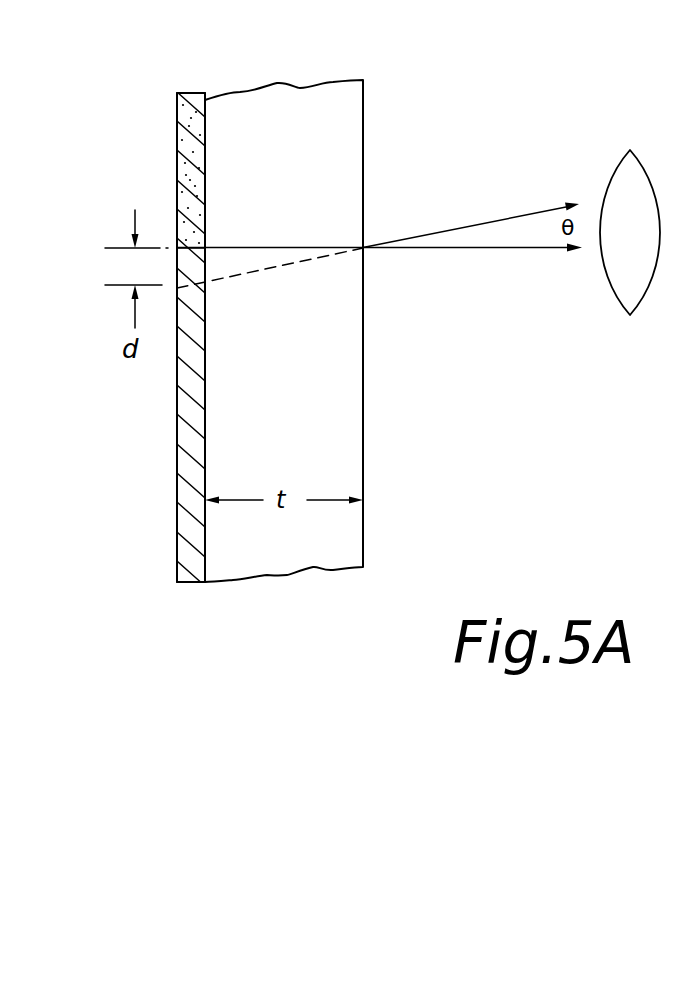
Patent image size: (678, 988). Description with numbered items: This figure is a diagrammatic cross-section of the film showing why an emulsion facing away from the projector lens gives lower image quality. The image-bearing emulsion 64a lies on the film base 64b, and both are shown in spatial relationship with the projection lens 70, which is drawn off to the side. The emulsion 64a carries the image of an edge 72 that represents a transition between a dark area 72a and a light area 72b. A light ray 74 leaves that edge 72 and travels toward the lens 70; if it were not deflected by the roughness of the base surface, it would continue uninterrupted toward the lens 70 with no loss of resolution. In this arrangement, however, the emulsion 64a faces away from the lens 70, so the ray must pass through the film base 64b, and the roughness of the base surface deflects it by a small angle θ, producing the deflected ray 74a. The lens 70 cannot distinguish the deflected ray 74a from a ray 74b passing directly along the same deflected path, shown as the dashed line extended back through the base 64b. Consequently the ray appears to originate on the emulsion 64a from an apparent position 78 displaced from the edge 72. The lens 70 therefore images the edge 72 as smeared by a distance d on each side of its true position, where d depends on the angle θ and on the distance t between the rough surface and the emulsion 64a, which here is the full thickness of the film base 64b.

The image-bearing emulsion 64a is at (192, 563).
The film base 64b is at (313, 565).
The projection lens 70 is at (638, 172).
The edge 72 is at (193, 243).
The dark area 72a is at (183, 132).
The light area 72b is at (178, 333).
The light ray 74 is at (475, 248).
The deflected ray 74a is at (498, 220).
The ray passing directly along the deflected path 74b is at (290, 262).
The apparent position 78 is at (203, 363).